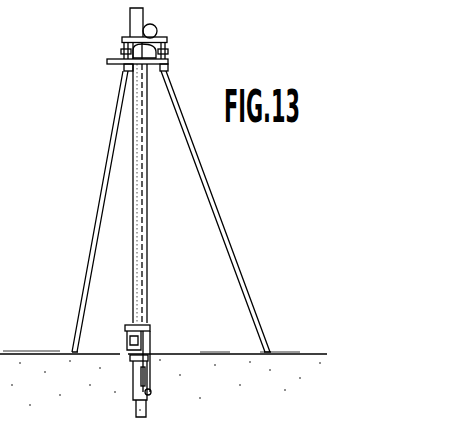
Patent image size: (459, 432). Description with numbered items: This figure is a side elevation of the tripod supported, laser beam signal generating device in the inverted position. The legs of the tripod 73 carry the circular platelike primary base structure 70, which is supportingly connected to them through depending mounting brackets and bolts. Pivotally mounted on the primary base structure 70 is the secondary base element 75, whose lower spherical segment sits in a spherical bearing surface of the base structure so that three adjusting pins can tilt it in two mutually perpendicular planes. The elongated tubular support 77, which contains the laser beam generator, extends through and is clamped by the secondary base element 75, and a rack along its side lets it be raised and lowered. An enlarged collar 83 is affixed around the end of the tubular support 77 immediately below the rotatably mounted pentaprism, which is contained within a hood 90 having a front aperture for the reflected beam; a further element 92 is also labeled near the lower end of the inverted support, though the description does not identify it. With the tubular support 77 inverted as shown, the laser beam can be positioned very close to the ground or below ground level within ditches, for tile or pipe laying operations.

The primary base structure 70 is at (112, 63).
The tripod 73 is at (168, 70).
The secondary base element 75 is at (118, 37).
The elongated tubular support 77 is at (137, 189).
The enlarged collar 83 is at (131, 377).
The hood 90 is at (148, 408).
The actuating lever 92 is at (152, 343).